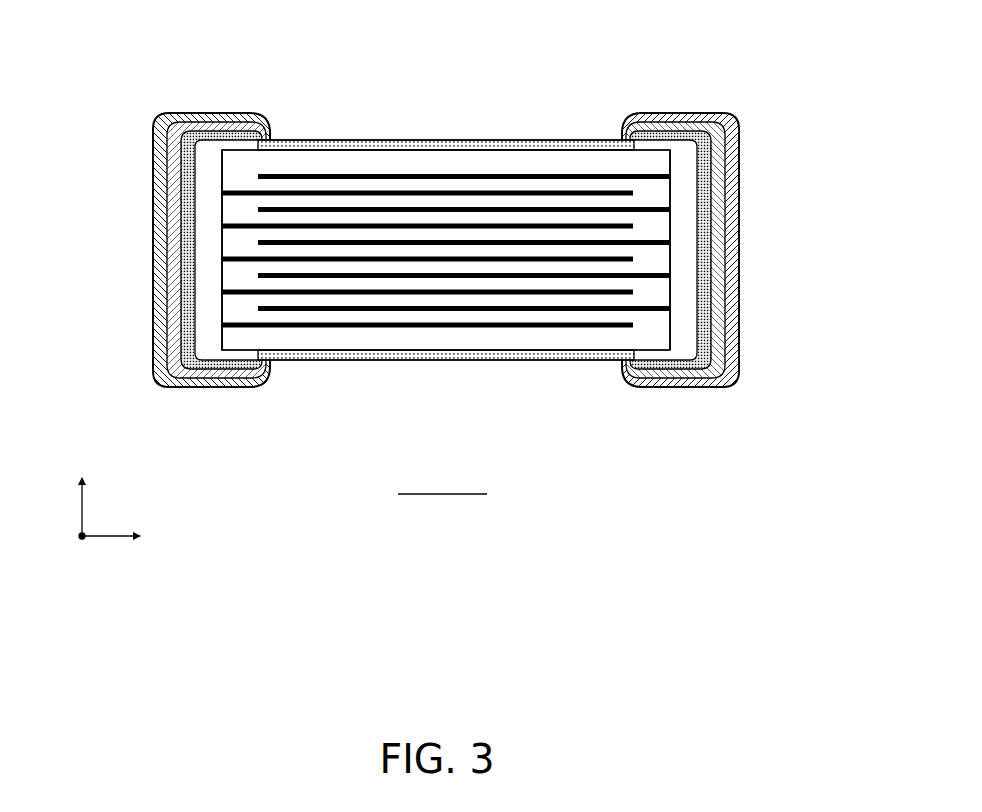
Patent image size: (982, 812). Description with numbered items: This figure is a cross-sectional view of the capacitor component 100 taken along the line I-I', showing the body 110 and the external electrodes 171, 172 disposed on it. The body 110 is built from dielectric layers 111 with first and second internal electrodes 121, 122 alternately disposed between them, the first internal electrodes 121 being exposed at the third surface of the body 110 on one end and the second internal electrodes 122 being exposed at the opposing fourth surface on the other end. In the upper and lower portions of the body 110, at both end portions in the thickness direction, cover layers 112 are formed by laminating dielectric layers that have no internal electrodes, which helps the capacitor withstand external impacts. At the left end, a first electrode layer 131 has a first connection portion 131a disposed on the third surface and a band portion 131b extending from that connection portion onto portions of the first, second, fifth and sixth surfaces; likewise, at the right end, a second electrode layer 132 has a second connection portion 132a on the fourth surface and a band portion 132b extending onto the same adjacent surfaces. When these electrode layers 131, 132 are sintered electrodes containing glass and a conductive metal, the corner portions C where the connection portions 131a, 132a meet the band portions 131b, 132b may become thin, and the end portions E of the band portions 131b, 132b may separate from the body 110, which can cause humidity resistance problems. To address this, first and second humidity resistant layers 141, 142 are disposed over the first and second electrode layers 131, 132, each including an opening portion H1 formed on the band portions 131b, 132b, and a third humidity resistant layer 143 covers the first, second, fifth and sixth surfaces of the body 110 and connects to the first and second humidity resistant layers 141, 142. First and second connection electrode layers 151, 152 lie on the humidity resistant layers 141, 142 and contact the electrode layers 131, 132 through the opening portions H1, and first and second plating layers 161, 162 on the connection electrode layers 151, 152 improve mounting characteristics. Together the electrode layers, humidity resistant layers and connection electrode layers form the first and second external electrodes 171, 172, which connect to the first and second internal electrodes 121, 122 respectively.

The capacitor component 100 is at (425, 31).
The body 110 is at (557, 142).
The dielectric layers 111 is at (332, 187).
The cover layers 112 is at (470, 160).
The first internal electrode 121 is at (387, 192).
The second internal electrode 122 is at (423, 175).
The third humidity resistant layer 143 is at (522, 143).
The first electrode layer 131 is at (97, 320).
The first connection portion 131a is at (210, 330).
The band portion 131b is at (227, 358).
The second electrode layer 132 is at (795, 322).
The second connection portion 132a is at (683, 332).
The band portion 132b is at (668, 358).
The first humidity resistant layer 141 is at (160, 197).
The second humidity resistant layer 142 is at (735, 196).
The first connection electrode layer 151 is at (174, 232).
The second connection electrode layer 152 is at (720, 230).
The first plating layer 161 is at (188, 280).
The second plating layer 162 is at (705, 280).
The first external electrode 171 is at (58, 375).
The second external electrode 172 is at (840, 375).
The opening portion H1 is at (232, 113).
The end portions E is at (633, 146).
The corner portions C is at (690, 80).